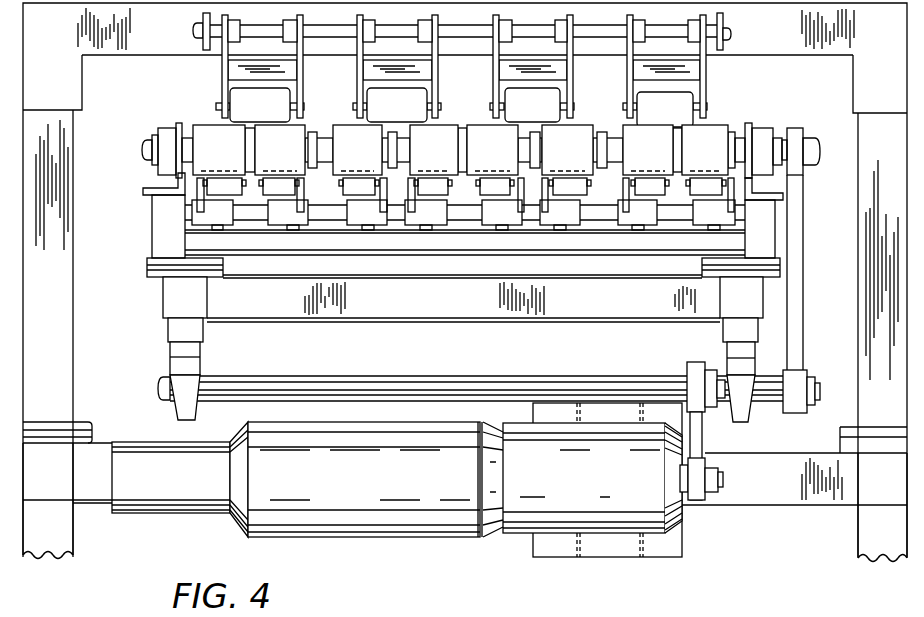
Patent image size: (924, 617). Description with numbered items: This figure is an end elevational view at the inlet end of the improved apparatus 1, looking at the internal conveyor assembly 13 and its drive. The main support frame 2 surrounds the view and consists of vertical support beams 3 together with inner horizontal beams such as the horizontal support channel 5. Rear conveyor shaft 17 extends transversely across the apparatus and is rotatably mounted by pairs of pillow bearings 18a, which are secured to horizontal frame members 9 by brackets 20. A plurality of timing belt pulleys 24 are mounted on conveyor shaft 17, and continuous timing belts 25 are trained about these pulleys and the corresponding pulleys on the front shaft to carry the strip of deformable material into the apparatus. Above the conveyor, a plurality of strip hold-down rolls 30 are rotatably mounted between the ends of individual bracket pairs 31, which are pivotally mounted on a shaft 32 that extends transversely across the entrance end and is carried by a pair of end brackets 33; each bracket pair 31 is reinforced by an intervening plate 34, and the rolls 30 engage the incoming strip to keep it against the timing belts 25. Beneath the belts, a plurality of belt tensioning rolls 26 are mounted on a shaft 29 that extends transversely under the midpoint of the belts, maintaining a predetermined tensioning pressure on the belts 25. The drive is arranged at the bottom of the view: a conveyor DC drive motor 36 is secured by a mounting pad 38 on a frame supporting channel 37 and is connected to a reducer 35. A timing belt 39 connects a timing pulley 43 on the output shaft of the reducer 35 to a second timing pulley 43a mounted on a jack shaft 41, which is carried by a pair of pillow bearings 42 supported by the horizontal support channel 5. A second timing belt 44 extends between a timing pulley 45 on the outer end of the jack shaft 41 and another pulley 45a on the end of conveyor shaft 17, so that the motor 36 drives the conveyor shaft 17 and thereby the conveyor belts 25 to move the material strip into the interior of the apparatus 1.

The apparatus 1 is at (417, 543).
The main support frame 2 is at (76, 268).
The vertical support beams 3 is at (63, 538).
The inner horizontal support beam 5 is at (378, 297).
The horizontal frame members 9 is at (163, 240).
The internal conveyor assembly 13 is at (722, 117).
The rear conveyor shaft 17 is at (143, 147).
The pillow bearings 18a is at (168, 140).
The brackets 20 is at (165, 197).
The timing belt pulleys 24 is at (194, 126).
The timing belts 25 is at (351, 136).
The belt tensioning rolls 26 is at (433, 187).
The shaft 29 is at (462, 213).
The strip hold-down rolls 30 is at (270, 113).
The bracket pairs 31 is at (358, 48).
The shaft 32 is at (467, 32).
The end brackets 33 is at (203, 33).
The intervening plate 34 is at (534, 75).
The reducer 35 is at (607, 498).
The conveyor DC drive motor 36 is at (377, 500).
The frame supporting channel 37 is at (782, 490).
The mounting pad 38 is at (545, 545).
The timing belt 39 is at (697, 443).
The jack shaft 41 is at (447, 387).
The pillow bearings 42 is at (747, 352).
The timing pulley 43 is at (707, 497).
The second timing pulley 43a is at (688, 392).
The second timing belt 44 is at (795, 303).
The timing pulley 45 is at (815, 398).
The pulley 45a is at (806, 133).